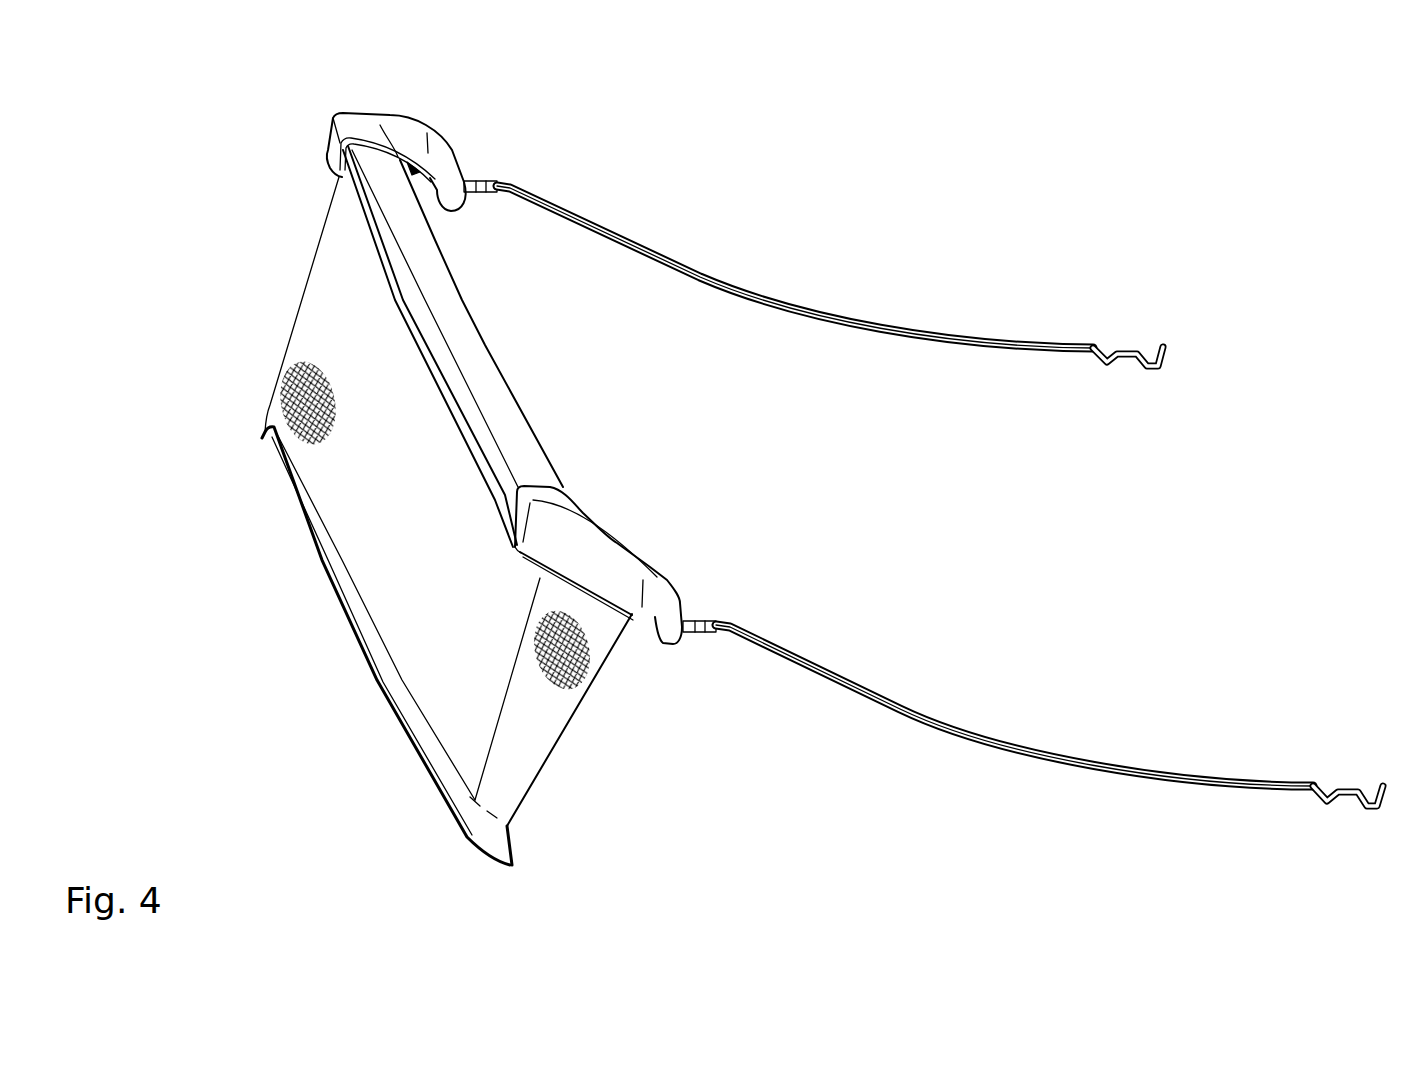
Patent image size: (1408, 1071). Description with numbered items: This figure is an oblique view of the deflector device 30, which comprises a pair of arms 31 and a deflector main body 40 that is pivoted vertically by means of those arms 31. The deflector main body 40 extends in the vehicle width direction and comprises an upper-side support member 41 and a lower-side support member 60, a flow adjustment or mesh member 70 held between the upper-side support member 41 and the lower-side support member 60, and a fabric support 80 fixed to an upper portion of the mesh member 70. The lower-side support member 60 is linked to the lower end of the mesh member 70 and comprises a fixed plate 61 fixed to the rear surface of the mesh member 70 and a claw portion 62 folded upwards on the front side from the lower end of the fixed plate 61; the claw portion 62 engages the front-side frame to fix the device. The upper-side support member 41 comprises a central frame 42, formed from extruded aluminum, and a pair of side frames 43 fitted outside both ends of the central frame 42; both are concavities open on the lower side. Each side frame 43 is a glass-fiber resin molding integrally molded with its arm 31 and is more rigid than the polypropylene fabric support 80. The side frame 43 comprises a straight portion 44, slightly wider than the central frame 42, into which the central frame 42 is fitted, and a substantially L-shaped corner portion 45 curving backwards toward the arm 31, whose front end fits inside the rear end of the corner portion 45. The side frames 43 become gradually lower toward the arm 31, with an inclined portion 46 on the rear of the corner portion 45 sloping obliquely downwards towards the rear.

The deflector device 30 is at (226, 228).
The arm 31 is at (670, 258).
The deflector main body 40 is at (522, 330).
The upper-side support member 41 is at (437, 237).
The central frame 42 is at (452, 307).
The side frame 43 is at (388, 114).
The straight portion 44 is at (333, 145).
The corner portion 45 is at (417, 128).
The inclined portion 46 is at (443, 158).
The lower-side support member 60 is at (488, 857).
The fixed plate 61 is at (514, 846).
The claw portion 62 is at (452, 820).
The mesh member 70 is at (297, 322).
The fabric support 80 is at (370, 237).